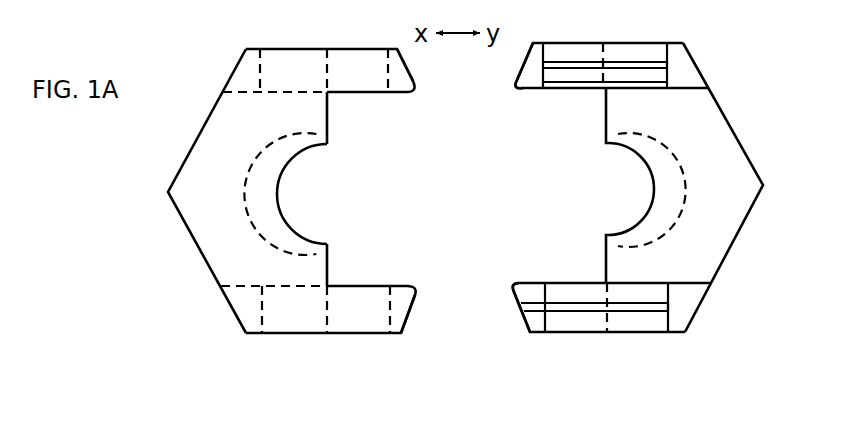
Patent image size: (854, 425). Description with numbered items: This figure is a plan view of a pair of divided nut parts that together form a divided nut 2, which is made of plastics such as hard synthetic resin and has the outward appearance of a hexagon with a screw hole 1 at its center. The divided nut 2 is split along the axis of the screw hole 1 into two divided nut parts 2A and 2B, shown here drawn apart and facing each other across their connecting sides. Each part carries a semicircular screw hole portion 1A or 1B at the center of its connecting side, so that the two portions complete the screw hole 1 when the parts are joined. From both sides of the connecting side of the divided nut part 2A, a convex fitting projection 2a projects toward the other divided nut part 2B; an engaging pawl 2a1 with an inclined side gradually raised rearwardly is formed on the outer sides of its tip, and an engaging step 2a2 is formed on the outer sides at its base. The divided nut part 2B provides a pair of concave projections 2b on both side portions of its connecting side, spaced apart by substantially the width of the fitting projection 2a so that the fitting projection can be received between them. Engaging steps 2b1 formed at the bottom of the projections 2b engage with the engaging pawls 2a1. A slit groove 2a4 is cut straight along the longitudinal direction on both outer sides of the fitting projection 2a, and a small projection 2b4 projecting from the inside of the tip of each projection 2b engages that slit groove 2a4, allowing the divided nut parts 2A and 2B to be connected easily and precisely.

The screw hole 1 is at (464, 194).
The screw hole portion 1A is at (627, 151).
The screw hole portion 1B is at (308, 153).
The divided nut 2 is at (469, 212).
The divided nut part 2A is at (624, 198).
The divided nut part 2B is at (327, 200).
The fitting projection 2a is at (636, 198).
The engaging pawl 2a1 is at (527, 84).
The engaging step 2a2 is at (668, 71).
The slit groove 2a4 is at (563, 63).
The projection 2b is at (332, 200).
The engaging step 2b1 is at (260, 77).
The small projection 2b4 is at (409, 68).